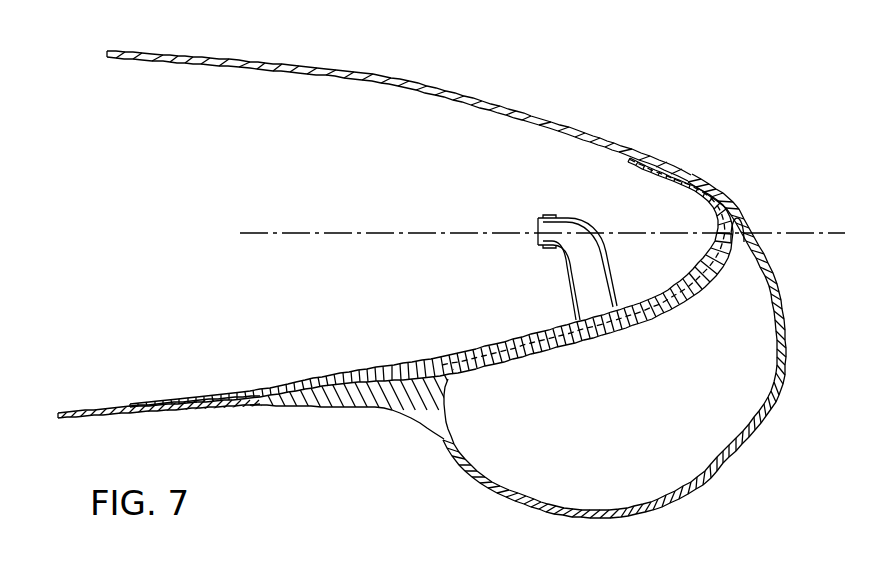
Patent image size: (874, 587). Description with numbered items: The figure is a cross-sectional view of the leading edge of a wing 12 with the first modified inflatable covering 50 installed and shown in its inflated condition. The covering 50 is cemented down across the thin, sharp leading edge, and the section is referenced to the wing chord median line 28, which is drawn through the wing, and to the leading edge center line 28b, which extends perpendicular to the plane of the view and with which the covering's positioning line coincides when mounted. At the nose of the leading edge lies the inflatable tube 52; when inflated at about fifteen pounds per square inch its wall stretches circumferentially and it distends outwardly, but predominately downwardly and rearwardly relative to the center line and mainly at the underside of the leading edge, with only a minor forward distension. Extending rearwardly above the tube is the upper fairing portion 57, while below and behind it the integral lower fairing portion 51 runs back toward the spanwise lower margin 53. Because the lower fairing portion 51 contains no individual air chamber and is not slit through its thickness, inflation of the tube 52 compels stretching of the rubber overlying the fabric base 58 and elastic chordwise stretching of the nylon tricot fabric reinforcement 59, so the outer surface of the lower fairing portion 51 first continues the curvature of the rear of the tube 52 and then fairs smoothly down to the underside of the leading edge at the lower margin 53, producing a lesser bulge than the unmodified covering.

The wing 12 is at (531, 118).
The wing chord median line 28 is at (460, 233).
The leading edge center line 28b is at (729, 238).
The first modified inflatable covering 50 is at (706, 166).
The lower fairing portion 51 is at (338, 409).
The inflatable tube 52 is at (772, 377).
The lower margin 53 is at (238, 407).
The upper fairing portion 57 is at (721, 206).
The fabric base 58 is at (335, 389).
The nylon tricot fabric reinforcement 59 is at (417, 421).